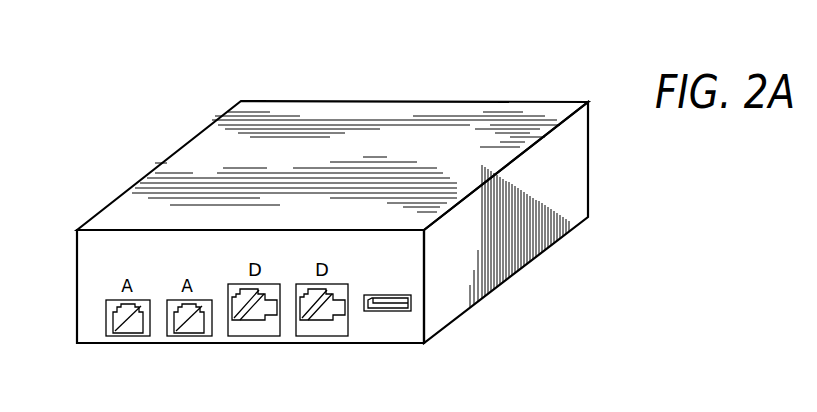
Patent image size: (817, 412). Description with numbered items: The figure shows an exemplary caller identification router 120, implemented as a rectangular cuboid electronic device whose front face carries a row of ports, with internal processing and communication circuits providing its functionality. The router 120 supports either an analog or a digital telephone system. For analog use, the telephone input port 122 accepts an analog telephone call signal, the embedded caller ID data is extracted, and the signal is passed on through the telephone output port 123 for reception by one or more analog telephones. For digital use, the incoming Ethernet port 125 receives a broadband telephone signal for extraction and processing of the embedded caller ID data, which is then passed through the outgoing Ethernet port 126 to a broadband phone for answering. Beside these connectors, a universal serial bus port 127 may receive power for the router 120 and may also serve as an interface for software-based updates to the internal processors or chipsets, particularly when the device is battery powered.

The caller identification router 120 is at (346, 101).
The telephone input port 122 is at (128, 330).
The telephone output port 123 is at (188, 330).
The incoming Ethernet port 125 is at (257, 318).
The outgoing Ethernet port 126 is at (328, 318).
The universal serial bus (USB) port 127 is at (395, 312).